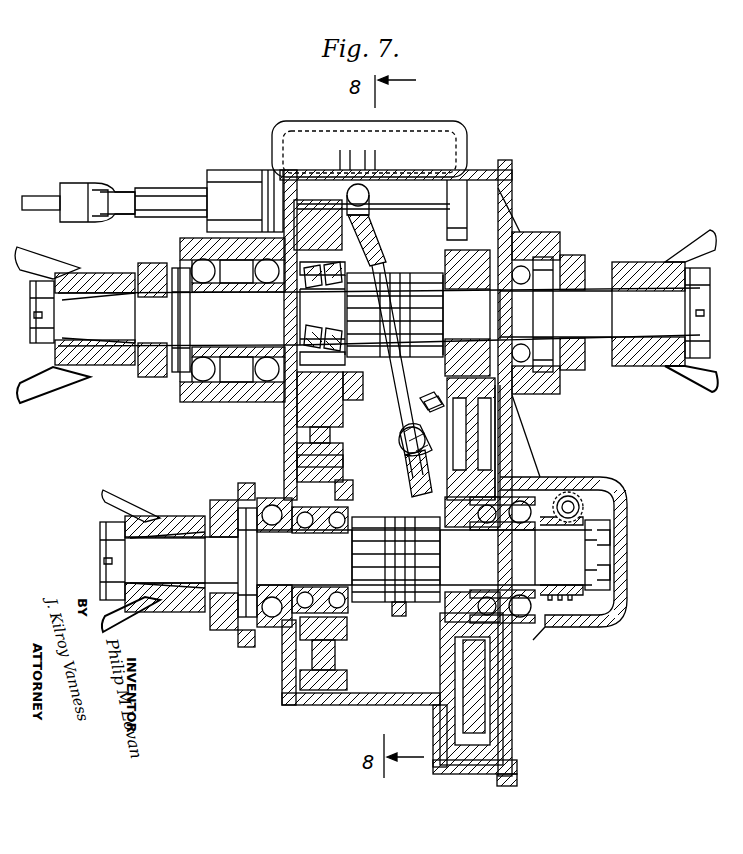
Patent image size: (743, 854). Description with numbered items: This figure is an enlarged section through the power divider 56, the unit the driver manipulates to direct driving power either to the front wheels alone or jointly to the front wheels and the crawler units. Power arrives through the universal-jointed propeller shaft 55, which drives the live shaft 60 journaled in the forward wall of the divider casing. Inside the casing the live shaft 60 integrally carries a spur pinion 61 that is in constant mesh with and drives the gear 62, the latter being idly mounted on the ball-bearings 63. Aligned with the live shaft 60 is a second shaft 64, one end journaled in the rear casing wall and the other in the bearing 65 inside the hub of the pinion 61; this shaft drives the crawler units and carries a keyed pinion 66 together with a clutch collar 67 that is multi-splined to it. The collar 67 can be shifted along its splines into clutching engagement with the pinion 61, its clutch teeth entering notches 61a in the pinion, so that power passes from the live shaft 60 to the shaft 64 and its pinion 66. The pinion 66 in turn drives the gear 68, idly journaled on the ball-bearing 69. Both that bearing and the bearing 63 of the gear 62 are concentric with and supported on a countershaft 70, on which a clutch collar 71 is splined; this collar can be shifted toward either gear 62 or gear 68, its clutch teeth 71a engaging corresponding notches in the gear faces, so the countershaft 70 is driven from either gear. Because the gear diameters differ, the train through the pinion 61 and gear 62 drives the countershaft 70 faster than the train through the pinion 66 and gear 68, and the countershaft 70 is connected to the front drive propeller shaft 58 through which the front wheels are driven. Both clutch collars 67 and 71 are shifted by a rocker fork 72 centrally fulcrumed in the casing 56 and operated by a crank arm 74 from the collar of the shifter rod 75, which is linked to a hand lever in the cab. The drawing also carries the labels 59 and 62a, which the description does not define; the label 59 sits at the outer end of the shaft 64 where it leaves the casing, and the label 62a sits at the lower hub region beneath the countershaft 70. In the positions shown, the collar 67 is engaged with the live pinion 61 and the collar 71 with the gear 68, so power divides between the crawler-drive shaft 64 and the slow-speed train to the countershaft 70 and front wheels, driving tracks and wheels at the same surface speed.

The universal-jointed propeller shaft 55 is at (40, 400).
The power divider 56 is at (398, 172).
The front drive propeller shaft 58 is at (118, 510).
The universal joint yoke 59 is at (698, 248).
The live shaft 60 is at (148, 327).
The spur pinion 61 is at (310, 424).
The notches 61a is at (353, 382).
The gear 62 is at (337, 453).
The gear hub 62a is at (355, 633).
The ball-bearings 63 is at (338, 488).
The second shaft 64 is at (505, 307).
The bearing 65 is at (322, 290).
The pinion 66 is at (456, 256).
The clutch collar 67 is at (384, 262).
The gear 68 is at (474, 437).
The ball-bearing 69 is at (480, 478).
The countershaft 70 is at (208, 570).
The clutch collar 71 is at (387, 613).
The clutch teeth 71a is at (398, 620).
The rocker fork 72 is at (413, 477).
The crank arm 74 is at (378, 257).
The shifter rod 75 is at (38, 202).